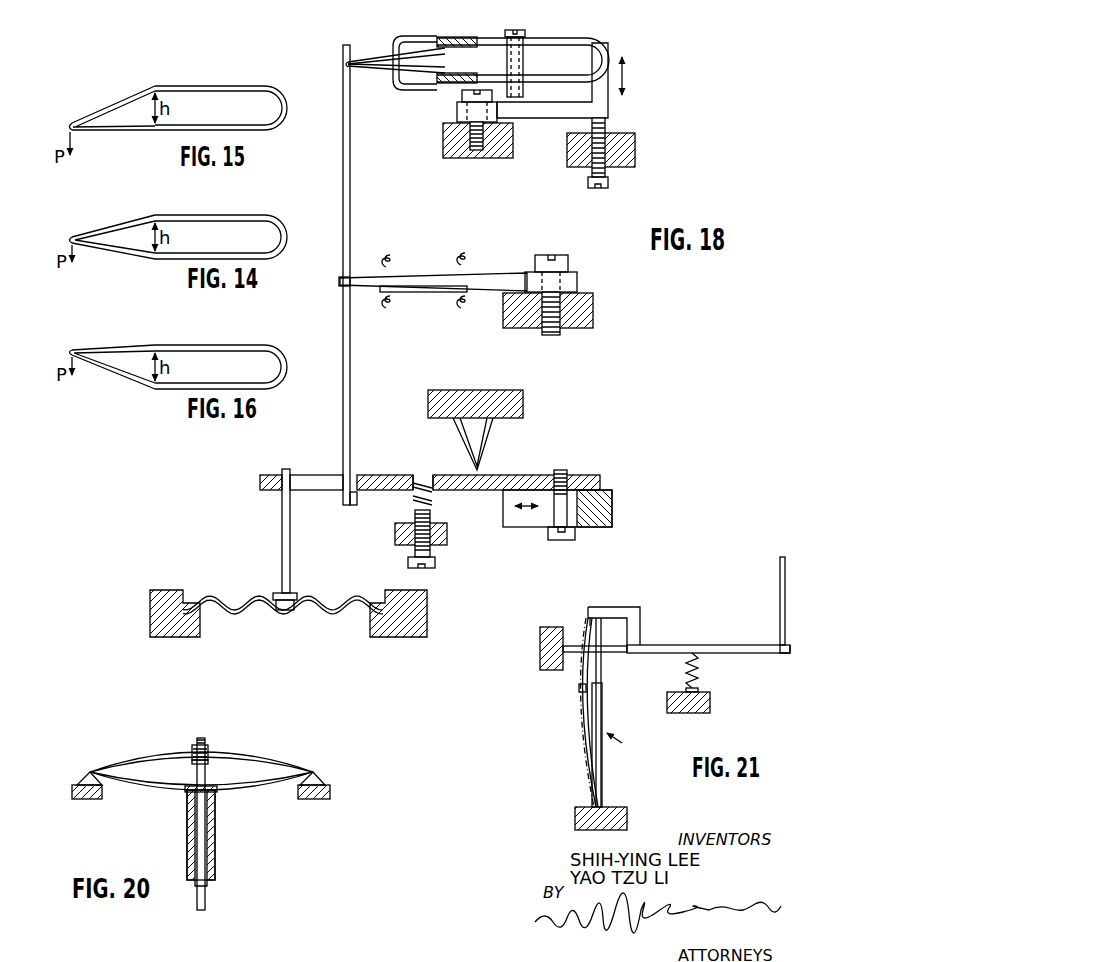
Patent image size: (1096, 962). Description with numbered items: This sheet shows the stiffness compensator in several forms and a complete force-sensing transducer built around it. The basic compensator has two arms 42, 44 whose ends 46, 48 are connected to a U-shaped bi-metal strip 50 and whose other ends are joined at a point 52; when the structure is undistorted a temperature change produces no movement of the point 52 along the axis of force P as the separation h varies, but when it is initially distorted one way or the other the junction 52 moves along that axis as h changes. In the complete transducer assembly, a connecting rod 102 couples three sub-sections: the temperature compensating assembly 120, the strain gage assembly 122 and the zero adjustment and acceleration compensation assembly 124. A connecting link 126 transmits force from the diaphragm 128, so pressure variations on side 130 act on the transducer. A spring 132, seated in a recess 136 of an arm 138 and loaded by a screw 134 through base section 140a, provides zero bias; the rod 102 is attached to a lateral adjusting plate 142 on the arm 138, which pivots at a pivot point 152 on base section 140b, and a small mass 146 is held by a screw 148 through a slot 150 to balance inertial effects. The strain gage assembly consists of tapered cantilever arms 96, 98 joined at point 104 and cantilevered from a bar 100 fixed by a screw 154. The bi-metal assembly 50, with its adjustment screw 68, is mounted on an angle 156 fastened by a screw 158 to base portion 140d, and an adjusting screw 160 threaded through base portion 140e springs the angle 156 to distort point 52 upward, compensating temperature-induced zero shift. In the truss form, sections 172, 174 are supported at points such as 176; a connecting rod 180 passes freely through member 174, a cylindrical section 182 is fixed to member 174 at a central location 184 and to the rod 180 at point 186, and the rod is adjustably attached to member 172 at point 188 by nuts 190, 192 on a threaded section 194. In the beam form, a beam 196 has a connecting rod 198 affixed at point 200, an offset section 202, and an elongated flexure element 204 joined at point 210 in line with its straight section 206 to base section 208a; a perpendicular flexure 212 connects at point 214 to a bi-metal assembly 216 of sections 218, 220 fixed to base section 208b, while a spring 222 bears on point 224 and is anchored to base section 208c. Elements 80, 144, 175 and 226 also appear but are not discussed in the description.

In FIG. 18, the arm 42 is at (376, 71).
In FIG. 18, the arm 44 is at (372, 56).
In FIG. 15, the end of arm 46 is at (153, 131).
In FIG. 15, the end of arm 48 is at (153, 88).
In FIG. 18, the bi-metal strip 50 is at (569, 28).
In FIG. 15, the junction point 52 is at (69, 124).
In FIG. 18, the junction point 52 is at (350, 60).
In FIG. 18, the screw 68 is at (522, 32).
In FIG. 18, the housing 80 is at (414, 36).
In FIG. 18, the cantilever arm 96 is at (442, 265).
In FIG. 18, the cantilever arm 98 is at (500, 272).
In FIG. 18, the support member 100 is at (581, 284).
In FIG. 18, the connecting rod 102 is at (350, 207).
In FIG. 18, the junction point 104 is at (355, 276).
In FIG. 18, the temperature compensating assembly 120 is at (636, 85).
In FIG. 18, the strain gage assembly 122 is at (520, 266).
In FIG. 18, the zero adjustment and acceleration compensation assembly 124 is at (418, 513).
In FIG. 18, the connecting link 126 is at (280, 536).
In FIG. 18, the diaphragm 128 is at (350, 582).
In FIG. 18, the side of diaphragm 130 is at (333, 611).
In FIG. 18, the spring 132 is at (427, 497).
In FIG. 18, the screw 134 is at (435, 563).
In FIG. 18, the recess 136 is at (416, 478).
In FIG. 18, the arm 138 is at (537, 474).
In FIG. 18, the section of base 140a is at (447, 534).
In FIG. 18, the section of base 140b is at (525, 409).
In FIG. 18, the portion of base 140d is at (448, 146).
In FIG. 18, the portion of base 140e is at (634, 148).
In FIG. 18, the lateral adjusting plate 142 is at (355, 500).
In FIG. 18, the flange 144 is at (282, 473).
In FIG. 18, the mass 146 is at (602, 528).
In FIG. 18, the screw 148 is at (563, 541).
In FIG. 18, the slot 150 is at (517, 528).
In FIG. 18, the pivot point 152 is at (480, 467).
In FIG. 18, the screw 154 is at (568, 261).
In FIG. 18, the angle 156 is at (604, 110).
In FIG. 18, the screw 158 is at (477, 152).
In FIG. 18, the adjusting screw 160 is at (607, 182).
In FIG. 20, the truss section 172 is at (262, 756).
In FIG. 20, the truss section 174 is at (162, 792).
In FIG. 20, the right support 175 is at (315, 770).
In FIG. 20, the support point 176 is at (88, 770).
In FIG. 20, the connecting rod 180 is at (206, 900).
In FIG. 20, the cylindrical section 182 is at (216, 849).
In FIG. 20, the central location 184 is at (215, 795).
In FIG. 20, the attachment point 186 is at (210, 884).
In FIG. 20, the attachment point 188 is at (192, 750).
In FIG. 20, the nut 190 is at (206, 761).
In FIG. 20, the nut 192 is at (207, 750).
In FIG. 20, the threaded section 194 is at (202, 738).
In FIG. 21, the beam 196 is at (700, 600).
In FIG. 21, the connecting rod 198 is at (779, 589).
In FIG. 21, the attachment point 200 is at (781, 641).
In FIG. 21, the offset section 202 is at (638, 610).
In FIG. 21, the elongated flexure element 204 is at (574, 645).
In FIG. 21, the straight section 206 is at (720, 645).
In FIG. 21, the section of base 208a is at (541, 651).
In FIG. 21, the section of base 208b is at (582, 807).
In FIG. 21, the section of base 208c is at (712, 706).
In FIG. 21, the connection point 210 is at (626, 649).
In FIG. 21, the flexure 212 is at (583, 671).
In FIG. 21, the connection point 214 is at (592, 618).
In FIG. 21, the bi-metal assembly 216 is at (631, 741).
In FIG. 21, the bi-metal section 218 is at (603, 721).
In FIG. 21, the bi-metal section 220 is at (582, 693).
In FIG. 21, the spring 222 is at (699, 687).
In FIG. 21, the bearing point 224 is at (700, 656).
In FIG. 21, the sleeve 226 is at (603, 691).